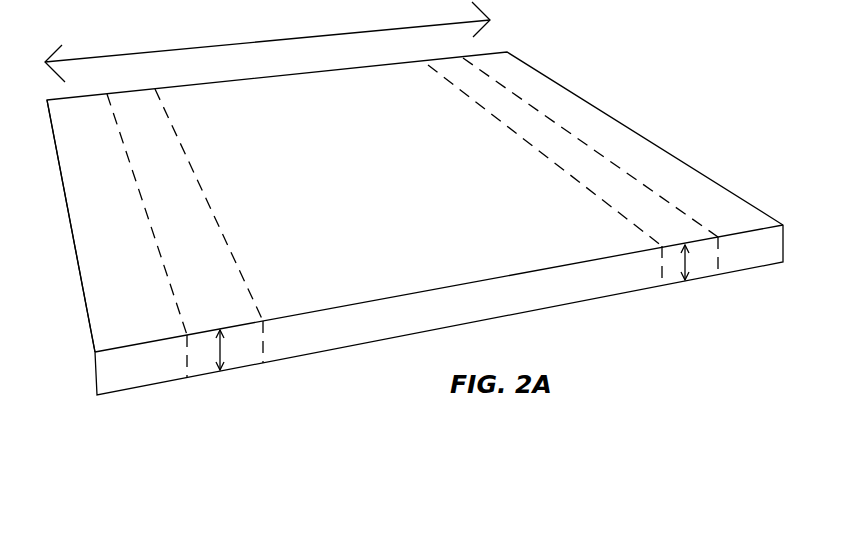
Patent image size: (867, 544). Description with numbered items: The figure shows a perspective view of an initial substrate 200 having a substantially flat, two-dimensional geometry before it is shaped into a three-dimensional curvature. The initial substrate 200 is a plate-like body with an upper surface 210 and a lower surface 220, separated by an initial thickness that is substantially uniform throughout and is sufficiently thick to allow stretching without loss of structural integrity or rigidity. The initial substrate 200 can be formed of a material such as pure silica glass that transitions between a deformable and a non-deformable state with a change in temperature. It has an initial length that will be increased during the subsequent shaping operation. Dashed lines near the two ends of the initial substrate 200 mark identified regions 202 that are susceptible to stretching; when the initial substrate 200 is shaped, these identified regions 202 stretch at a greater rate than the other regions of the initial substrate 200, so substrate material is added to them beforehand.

The initial substrate 200 is at (671, 99).
The identified regions 202 is at (228, 307).
The upper surface 210 is at (360, 200).
The lower surface 220 is at (535, 320).